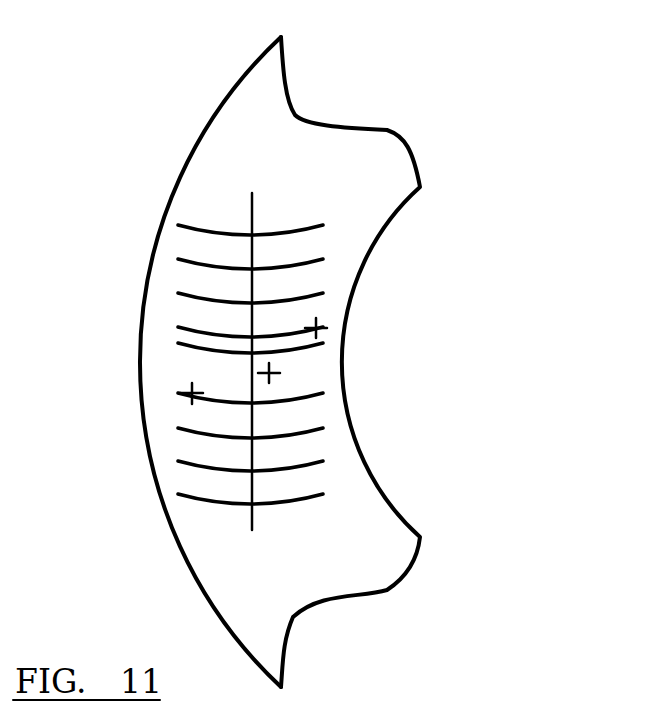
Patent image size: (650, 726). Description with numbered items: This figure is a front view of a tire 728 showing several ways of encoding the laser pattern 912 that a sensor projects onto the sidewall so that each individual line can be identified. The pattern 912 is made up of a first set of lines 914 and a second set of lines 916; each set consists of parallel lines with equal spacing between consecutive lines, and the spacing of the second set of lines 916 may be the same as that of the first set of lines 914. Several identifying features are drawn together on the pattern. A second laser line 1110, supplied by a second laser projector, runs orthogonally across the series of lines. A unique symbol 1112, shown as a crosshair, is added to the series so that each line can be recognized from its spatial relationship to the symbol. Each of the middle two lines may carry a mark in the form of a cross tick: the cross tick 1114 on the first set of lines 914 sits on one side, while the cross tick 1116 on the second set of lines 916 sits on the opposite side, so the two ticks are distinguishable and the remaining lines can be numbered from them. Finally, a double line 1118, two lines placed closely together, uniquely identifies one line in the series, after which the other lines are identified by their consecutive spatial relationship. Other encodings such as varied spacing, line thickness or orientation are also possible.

The tire 728 is at (208, 155).
The pattern 912 is at (333, 212).
The first set of lines 914 is at (168, 222).
The second set of lines 916 is at (173, 390).
The second laser line 1110 is at (252, 522).
The unique symbol 1112 is at (280, 374).
The cross tick 1114 is at (320, 329).
The cross tick 1116 is at (200, 388).
The double line 1118 is at (187, 345).